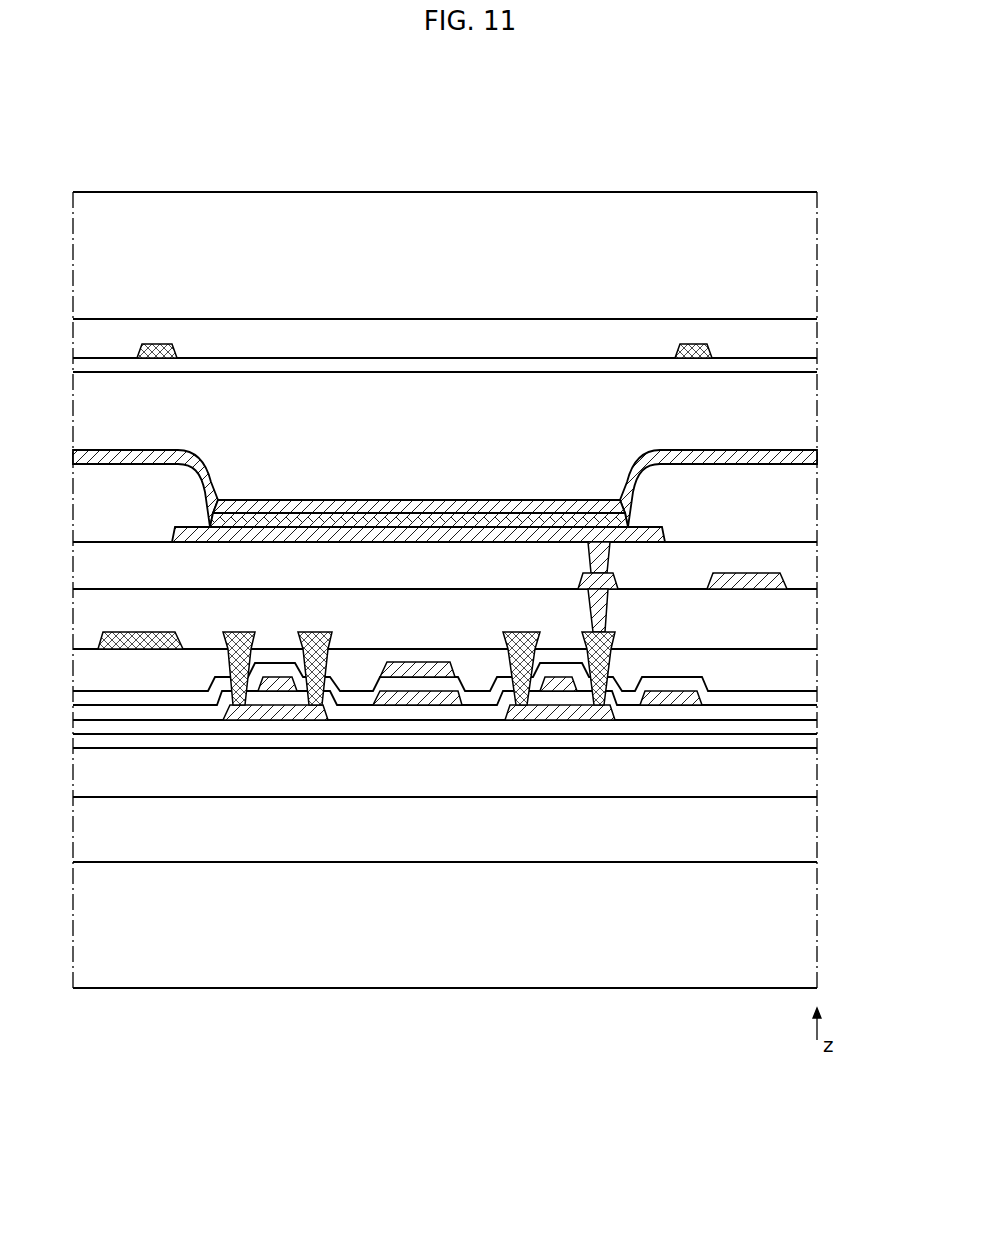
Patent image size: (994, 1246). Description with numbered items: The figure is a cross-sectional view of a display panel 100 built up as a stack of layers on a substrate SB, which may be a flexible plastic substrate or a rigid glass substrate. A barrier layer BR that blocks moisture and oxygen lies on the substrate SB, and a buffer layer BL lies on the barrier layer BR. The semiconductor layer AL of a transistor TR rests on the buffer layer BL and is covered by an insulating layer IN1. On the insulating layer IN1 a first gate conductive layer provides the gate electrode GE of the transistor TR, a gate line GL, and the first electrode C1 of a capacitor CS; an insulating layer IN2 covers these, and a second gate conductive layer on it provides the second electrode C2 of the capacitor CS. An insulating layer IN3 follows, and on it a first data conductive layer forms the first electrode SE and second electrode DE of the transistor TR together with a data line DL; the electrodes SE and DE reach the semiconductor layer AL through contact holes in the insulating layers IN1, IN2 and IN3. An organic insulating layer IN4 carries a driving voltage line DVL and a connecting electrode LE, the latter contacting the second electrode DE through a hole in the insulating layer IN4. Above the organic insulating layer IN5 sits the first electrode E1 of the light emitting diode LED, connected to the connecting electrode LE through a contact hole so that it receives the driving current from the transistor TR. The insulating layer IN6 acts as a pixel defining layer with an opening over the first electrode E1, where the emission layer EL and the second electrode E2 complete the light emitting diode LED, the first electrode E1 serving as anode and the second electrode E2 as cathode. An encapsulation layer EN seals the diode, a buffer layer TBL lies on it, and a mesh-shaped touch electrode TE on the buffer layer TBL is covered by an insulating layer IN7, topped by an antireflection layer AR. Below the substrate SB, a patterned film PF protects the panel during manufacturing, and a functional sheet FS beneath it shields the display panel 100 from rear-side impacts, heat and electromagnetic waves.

The display panel 100 is at (609, 150).
The light emitting diode LED is at (418, 321).
The first electrode E1 is at (373, 535).
The emission layer EL is at (420, 520).
The second electrode E2 is at (470, 506).
The touch electrode TE is at (690, 346).
The antireflection layer AR is at (808, 257).
The insulating layer IN7 is at (808, 333).
The buffer layer TBL is at (808, 367).
The encapsulation layer EN is at (808, 408).
The insulating layer IN6 is at (808, 497).
The connecting electrode LE is at (619, 582).
The insulating layer IN5 is at (808, 555).
The driving voltage line DVL is at (808, 588).
The insulating layer IN4 is at (808, 618).
The insulating layer IN3 is at (808, 663).
The insulating layer IN2 is at (812, 694).
The insulating layer IN1 is at (808, 712).
The buffer layer BL is at (810, 727).
The barrier layer BR is at (808, 741).
The substrate SB is at (808, 779).
The patterned film PF is at (808, 828).
The functional sheet FS is at (808, 928).
The data line DL is at (150, 646).
The capacitor CS is at (342, 859).
The first electrode of the capacitor C1 is at (400, 703).
The second electrode of the capacitor C2 is at (432, 675).
The transistor TR is at (560, 859).
The first electrode SE is at (518, 703).
The gate electrode GE is at (557, 687).
The semiconductor layer AL is at (570, 712).
The second electrode DE is at (608, 712).
The gate line GL is at (672, 700).